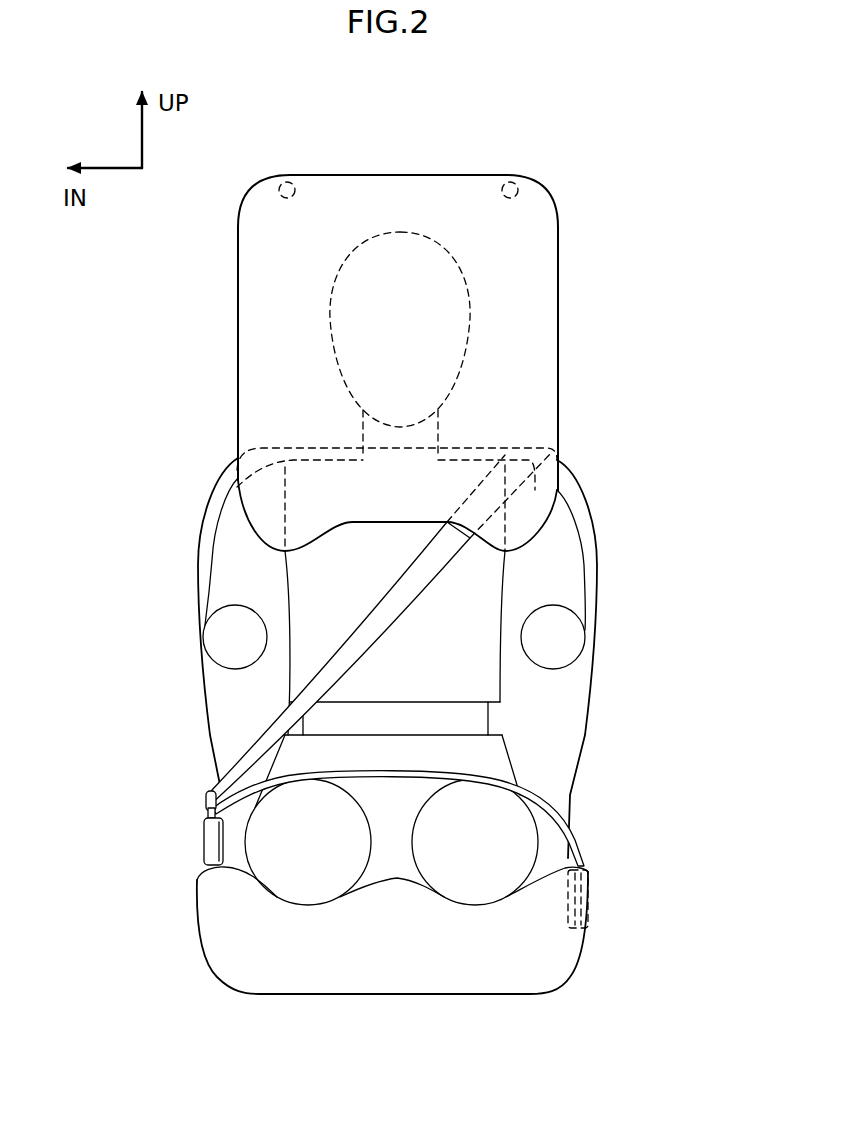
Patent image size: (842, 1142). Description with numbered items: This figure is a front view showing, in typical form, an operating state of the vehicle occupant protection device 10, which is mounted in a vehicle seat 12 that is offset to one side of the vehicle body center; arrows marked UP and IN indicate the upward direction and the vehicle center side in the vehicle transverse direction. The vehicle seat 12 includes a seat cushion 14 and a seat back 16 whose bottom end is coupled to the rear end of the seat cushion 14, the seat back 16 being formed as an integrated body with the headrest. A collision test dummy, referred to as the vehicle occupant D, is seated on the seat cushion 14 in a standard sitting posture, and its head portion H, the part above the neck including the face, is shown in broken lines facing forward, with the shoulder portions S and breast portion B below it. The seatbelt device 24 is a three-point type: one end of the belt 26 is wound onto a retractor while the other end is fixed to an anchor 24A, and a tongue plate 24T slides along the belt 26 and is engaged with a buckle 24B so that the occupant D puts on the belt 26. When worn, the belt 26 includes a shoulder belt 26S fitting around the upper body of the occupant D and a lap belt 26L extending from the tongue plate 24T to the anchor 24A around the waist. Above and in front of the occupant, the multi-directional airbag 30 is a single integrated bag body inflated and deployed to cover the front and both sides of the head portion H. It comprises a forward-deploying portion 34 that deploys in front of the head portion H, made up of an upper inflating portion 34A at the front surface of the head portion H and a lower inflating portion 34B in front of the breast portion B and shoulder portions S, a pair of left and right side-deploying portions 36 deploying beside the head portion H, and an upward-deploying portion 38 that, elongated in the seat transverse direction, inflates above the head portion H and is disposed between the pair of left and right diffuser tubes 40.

The vehicle occupant protection device 10 is at (592, 250).
The vehicle seat 12 is at (405, 657).
The seat cushion 14 is at (502, 995).
The seat back 16 is at (597, 550).
The seatbelt device 24 is at (406, 875).
The anchor 24A is at (590, 912).
The buckle 24B is at (208, 843).
The tongue plate 24T is at (207, 808).
The belt 26 is at (457, 659).
The shoulder belt 26S is at (410, 603).
The lap belt 26L is at (550, 808).
The multi-directional airbag 30 is at (307, 168).
The forward-deploying portion 34 is at (316, 391).
The upper inflating portion 34A is at (375, 358).
The lower inflating portion 34B is at (302, 513).
The side-deploying portion 36 is at (558, 368).
The upward-deploying portion 38 is at (363, 183).
The diffuser tube 40 is at (283, 176).
The head portion H is at (402, 232).
The shoulder portion S is at (290, 492).
The breast portion B is at (390, 510).
The vehicle occupant D is at (208, 557).